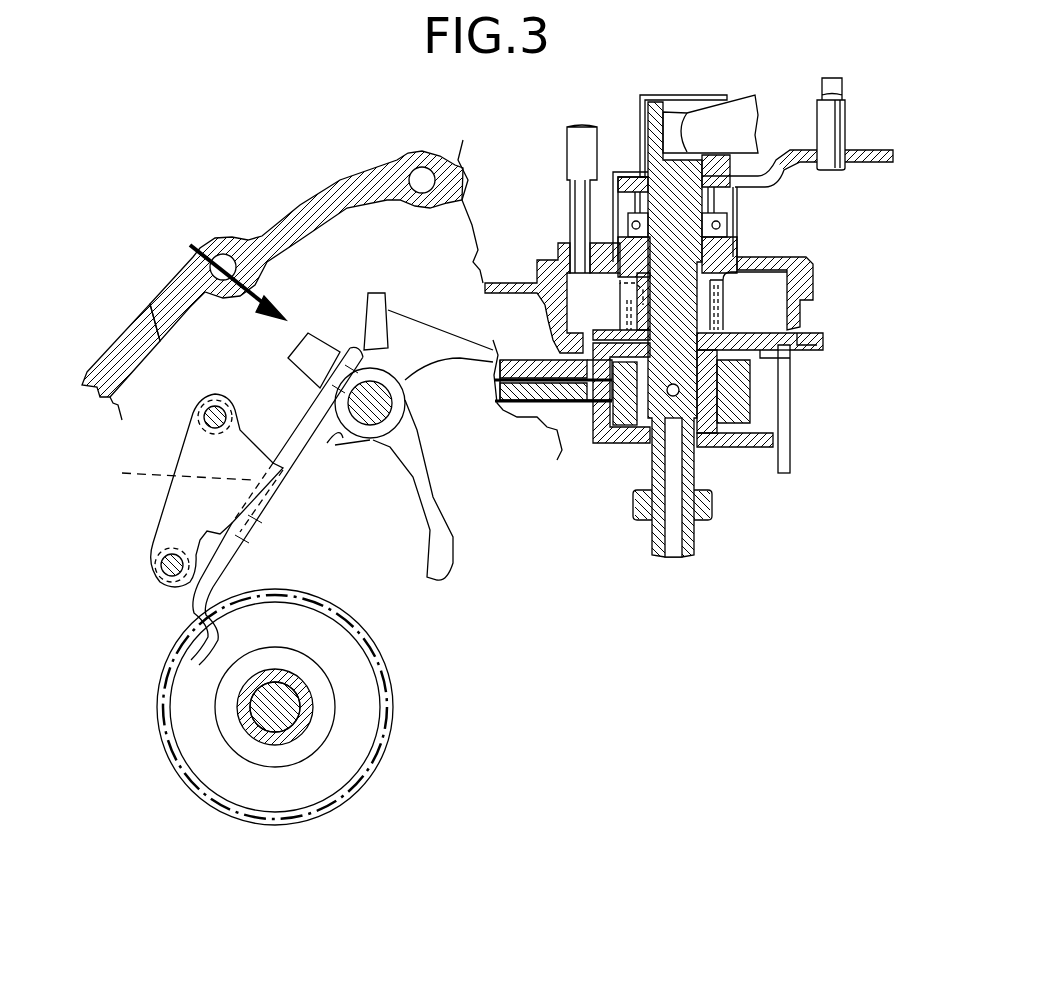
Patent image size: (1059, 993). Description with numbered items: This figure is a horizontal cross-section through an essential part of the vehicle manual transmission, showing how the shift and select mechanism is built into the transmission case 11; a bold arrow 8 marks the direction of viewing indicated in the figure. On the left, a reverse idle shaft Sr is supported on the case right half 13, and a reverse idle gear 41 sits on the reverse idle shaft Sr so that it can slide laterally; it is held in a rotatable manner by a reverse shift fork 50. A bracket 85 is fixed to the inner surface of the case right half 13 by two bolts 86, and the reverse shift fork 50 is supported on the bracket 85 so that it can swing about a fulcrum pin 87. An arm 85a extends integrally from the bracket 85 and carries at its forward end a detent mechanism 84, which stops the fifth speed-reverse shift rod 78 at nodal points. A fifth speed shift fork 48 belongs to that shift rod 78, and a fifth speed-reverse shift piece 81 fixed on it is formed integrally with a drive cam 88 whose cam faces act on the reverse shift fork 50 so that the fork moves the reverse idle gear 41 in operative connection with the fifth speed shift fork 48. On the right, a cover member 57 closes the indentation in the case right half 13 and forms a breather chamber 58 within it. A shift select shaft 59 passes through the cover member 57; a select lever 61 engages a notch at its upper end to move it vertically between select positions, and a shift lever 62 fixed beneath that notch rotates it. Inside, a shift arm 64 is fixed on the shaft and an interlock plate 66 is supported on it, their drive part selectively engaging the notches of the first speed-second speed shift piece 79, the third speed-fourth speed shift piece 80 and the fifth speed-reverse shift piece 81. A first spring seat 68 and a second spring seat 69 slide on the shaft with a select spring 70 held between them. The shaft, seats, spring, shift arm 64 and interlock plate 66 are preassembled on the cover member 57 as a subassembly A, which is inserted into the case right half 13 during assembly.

The viewing direction arrow 8 is at (221, 259).
The transmission case 11 is at (138, 307).
The case right half 13 is at (237, 237).
The reverse idle gear 41 is at (395, 680).
The fifth speed shift fork 48 is at (443, 550).
The reverse shift fork 50 is at (205, 578).
The cover member 57 is at (787, 258).
The breather chamber 58 is at (603, 311).
The shift select shaft 59 is at (653, 463).
The select lever 61 is at (740, 113).
The shift lever 62 is at (794, 150).
The shift arm 64 is at (747, 378).
The interlock plate 66 is at (737, 452).
The first spring seat 68 is at (743, 273).
The second spring seat 69 is at (777, 357).
The select spring 70 is at (807, 280).
The fifth speed-reverse shift rod 78 is at (374, 413).
The first speed-second speed shift piece 79 is at (572, 420).
The third speed-fourth speed shift piece 80 is at (492, 397).
The fifth speed-reverse shift piece 81 is at (548, 360).
The detent mechanism 84 is at (305, 376).
The bracket 85 is at (175, 460).
The arm 85a is at (347, 350).
The bolts 86 is at (212, 410).
The fulcrum pin 87 is at (168, 471).
The drive cam 88 is at (293, 473).
The subassembly A is at (742, 303).
The reverse idle shaft Sr is at (310, 723).